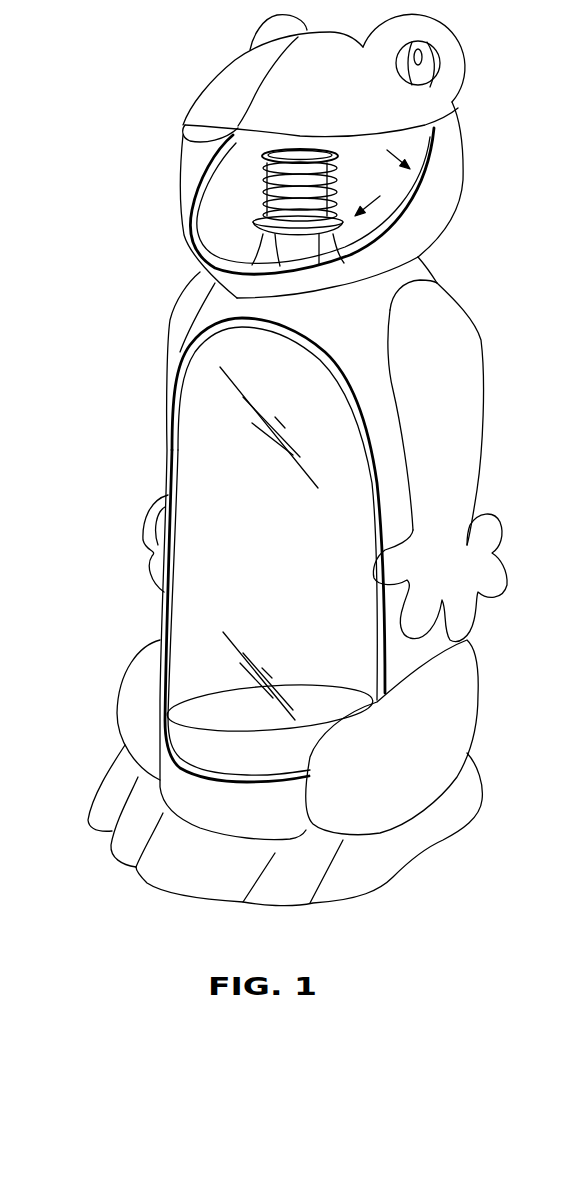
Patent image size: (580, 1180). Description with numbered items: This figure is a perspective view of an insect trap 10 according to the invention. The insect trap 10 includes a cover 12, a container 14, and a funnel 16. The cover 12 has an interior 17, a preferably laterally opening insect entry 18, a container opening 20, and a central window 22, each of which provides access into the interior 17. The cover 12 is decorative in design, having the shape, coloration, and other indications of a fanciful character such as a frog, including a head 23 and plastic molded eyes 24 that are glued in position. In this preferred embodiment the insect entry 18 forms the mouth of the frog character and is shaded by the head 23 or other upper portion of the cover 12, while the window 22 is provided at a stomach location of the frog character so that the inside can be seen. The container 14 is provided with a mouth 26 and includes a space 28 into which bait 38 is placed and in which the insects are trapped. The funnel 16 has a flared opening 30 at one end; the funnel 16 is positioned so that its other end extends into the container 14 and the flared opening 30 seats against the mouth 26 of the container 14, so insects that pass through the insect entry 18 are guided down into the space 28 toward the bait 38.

The insect trap 10 is at (105, 128).
The cover 12 is at (467, 339).
The container 14 is at (192, 246).
The funnel 16 is at (258, 154).
The interior 17 is at (380, 196).
The insect entry 18 is at (440, 178).
The container opening 20 is at (303, 840).
The central window 22 is at (348, 483).
The head 23 is at (222, 88).
The plastic molded eyes 24 is at (438, 63).
The mouth 26 is at (260, 178).
The space 28 is at (207, 490).
The flared opening 30 is at (335, 155).
The bait 38 is at (207, 711).